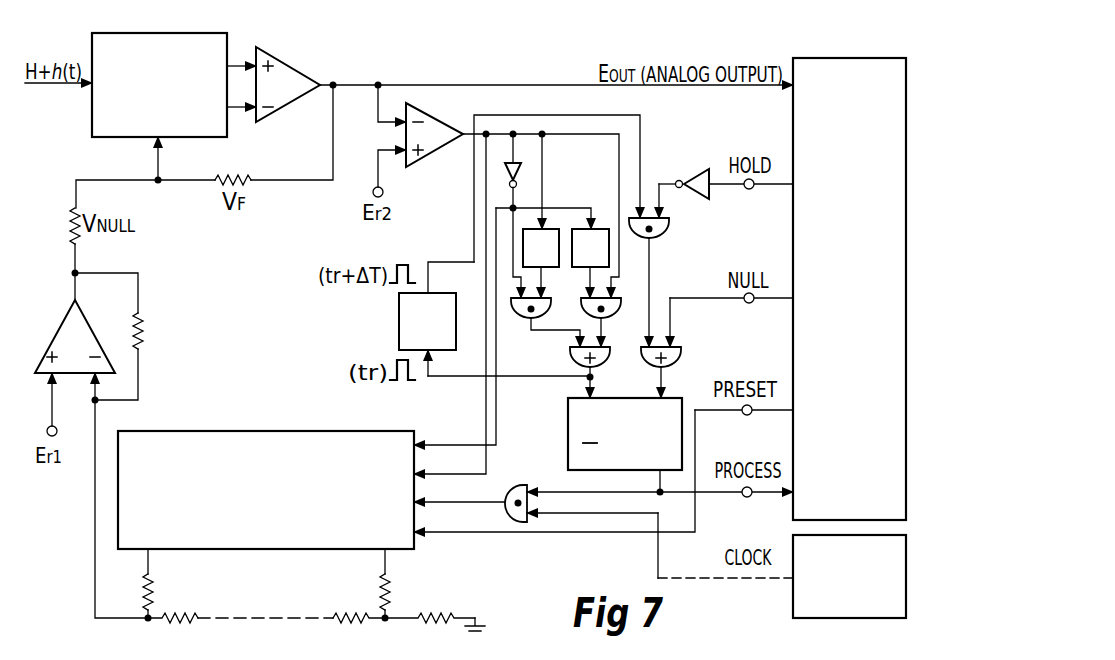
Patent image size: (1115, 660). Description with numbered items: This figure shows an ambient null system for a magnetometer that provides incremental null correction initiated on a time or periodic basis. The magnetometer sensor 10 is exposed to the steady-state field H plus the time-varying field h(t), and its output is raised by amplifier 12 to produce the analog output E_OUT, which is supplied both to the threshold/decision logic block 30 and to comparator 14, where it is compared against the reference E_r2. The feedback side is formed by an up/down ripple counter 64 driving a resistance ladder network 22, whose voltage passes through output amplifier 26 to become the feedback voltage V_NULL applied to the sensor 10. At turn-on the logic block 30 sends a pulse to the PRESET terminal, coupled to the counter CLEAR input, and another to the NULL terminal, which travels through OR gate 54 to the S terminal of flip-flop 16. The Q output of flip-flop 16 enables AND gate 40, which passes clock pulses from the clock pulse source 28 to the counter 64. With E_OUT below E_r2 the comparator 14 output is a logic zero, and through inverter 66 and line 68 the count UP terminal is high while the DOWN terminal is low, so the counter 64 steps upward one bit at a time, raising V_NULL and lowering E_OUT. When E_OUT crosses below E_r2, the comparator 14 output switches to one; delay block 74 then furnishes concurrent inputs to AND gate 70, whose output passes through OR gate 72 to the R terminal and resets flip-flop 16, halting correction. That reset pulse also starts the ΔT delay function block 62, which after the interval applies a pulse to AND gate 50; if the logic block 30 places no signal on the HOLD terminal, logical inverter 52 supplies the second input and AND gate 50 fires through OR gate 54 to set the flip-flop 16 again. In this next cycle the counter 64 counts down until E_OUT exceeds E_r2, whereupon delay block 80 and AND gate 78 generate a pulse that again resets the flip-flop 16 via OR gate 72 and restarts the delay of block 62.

The magnetometer sensor 10 is at (100, 120).
The amplifier 12 is at (287, 73).
The comparator 14 is at (440, 148).
The flip-flop 16 is at (568, 422).
The resistance ladder network 22 is at (280, 594).
The output amplifier 26 is at (68, 332).
The clock pulse source 28 is at (750, 580).
The threshold/decision logic block 30 is at (802, 124).
The AND gate 40 is at (512, 485).
The AND gate 50 is at (669, 228).
The logical inverter 52 is at (697, 177).
The OR gate 54 is at (680, 357).
The delay function block 62 is at (399, 319).
The up/down ripple counter 64 is at (278, 445).
The inverter 66 is at (527, 170).
The line 68 is at (497, 396).
The AND gate 70 is at (612, 312).
The OR gate 72 is at (603, 357).
The delay block 74 is at (598, 226).
The AND gate 78 is at (526, 313).
The delay function block 80 is at (553, 226).